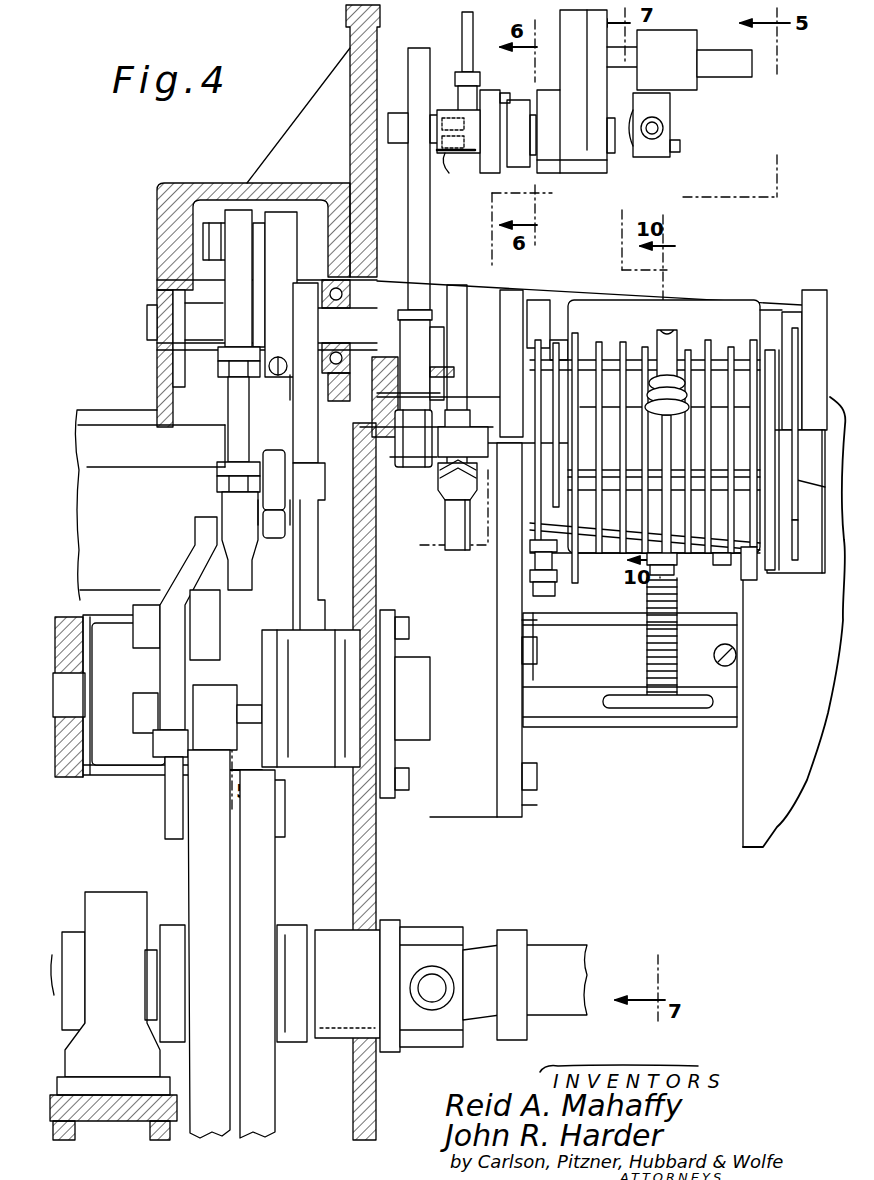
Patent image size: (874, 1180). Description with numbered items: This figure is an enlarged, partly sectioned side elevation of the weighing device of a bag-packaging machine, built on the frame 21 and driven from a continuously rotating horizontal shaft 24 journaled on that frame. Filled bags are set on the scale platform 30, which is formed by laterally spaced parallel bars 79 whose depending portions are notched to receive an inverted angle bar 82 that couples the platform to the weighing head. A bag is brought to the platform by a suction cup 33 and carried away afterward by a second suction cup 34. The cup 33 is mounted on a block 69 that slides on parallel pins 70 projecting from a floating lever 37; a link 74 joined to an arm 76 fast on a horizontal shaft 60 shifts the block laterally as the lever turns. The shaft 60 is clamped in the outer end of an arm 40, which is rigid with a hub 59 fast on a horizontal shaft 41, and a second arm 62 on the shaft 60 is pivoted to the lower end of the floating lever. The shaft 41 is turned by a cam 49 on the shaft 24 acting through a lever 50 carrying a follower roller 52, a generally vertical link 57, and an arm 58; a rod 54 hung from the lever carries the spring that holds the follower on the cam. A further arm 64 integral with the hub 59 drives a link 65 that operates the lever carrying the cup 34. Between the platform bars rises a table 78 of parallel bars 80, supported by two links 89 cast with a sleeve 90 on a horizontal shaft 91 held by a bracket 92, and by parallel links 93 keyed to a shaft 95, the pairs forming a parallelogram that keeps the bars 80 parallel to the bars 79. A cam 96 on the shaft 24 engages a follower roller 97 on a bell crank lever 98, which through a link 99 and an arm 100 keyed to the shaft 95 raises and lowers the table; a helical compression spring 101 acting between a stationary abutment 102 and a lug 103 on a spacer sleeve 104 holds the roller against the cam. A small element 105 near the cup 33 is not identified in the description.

The frame 21 is at (378, 836).
The horizontal shaft 24 is at (158, 983).
The platform 30 is at (733, 301).
The suction cup 33 is at (680, 130).
The suction cup 34 is at (677, 414).
The floating lever 37 is at (600, 92).
The arm 40 is at (429, 262).
The horizontal shaft 41 is at (309, 312).
The cam 49 is at (203, 864).
The lever 50 is at (162, 587).
The follower roller 52 is at (222, 690).
The rod 54 is at (165, 817).
The link 57 is at (238, 405).
The arm 58 is at (290, 267).
The hub 59 is at (443, 292).
The horizontal shaft 60 is at (458, 149).
The second arm 62 is at (528, 128).
The arm 64 is at (418, 392).
The link 65 is at (450, 529).
The block 69 is at (690, 42).
The pins 70 is at (720, 56).
The link 74 is at (470, 58).
The arm 76 is at (489, 98).
The table 78 is at (682, 318).
The bars 79 is at (605, 338).
The bars 80 is at (604, 345).
The angle bar 82 is at (777, 560).
The links 89 is at (595, 343).
The sleeve 90 is at (580, 300).
The horizontal shaft 91 is at (556, 325).
The bracket 92 is at (516, 290).
The links 93 is at (577, 566).
The shaft 95 is at (482, 380).
The cam 96 is at (270, 875).
The follower roller 97 is at (280, 830).
The bell crank lever 98 is at (313, 576).
The link 99 is at (277, 458).
The arm 100 is at (302, 418).
The helical compression spring 101 is at (648, 657).
The stationary abutment 102 is at (632, 722).
The lug 103 is at (678, 556).
The spacer sleeve 104 is at (720, 558).
The pivot 105 is at (663, 132).